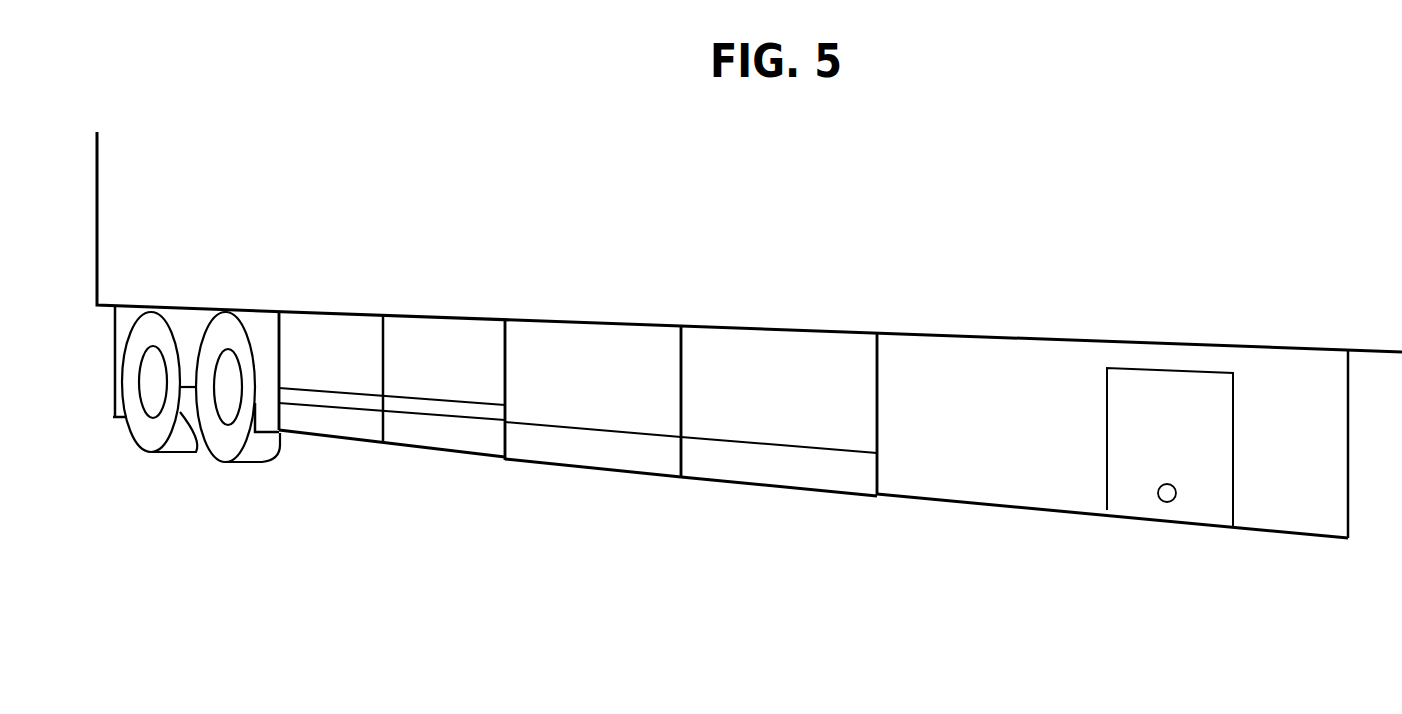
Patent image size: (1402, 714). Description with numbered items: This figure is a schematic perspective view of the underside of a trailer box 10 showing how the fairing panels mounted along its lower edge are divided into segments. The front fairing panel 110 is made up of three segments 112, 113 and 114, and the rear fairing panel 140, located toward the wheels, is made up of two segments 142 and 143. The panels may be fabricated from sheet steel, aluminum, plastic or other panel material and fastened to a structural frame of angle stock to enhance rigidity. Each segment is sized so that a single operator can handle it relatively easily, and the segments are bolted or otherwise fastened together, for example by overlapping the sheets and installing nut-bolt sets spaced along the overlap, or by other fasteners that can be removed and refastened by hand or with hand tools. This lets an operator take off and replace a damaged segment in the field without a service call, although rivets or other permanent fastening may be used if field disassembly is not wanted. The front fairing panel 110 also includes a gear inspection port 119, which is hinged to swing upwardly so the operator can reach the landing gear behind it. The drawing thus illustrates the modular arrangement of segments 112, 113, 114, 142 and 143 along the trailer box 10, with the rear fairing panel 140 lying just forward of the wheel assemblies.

The trailer box 10 is at (703, 233).
The front fairing panel 110 is at (1112, 422).
The segment 112 is at (947, 477).
The segment 113 is at (757, 425).
The segment 114 is at (573, 410).
The gear inspection port 119 is at (1130, 495).
The rear fairing panel 140 is at (392, 389).
The segment 142 is at (426, 390).
The segment 143 is at (319, 377).